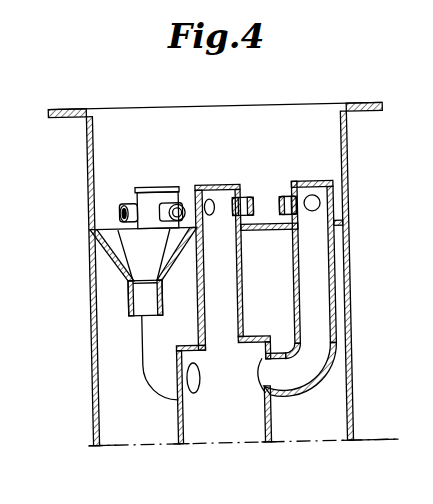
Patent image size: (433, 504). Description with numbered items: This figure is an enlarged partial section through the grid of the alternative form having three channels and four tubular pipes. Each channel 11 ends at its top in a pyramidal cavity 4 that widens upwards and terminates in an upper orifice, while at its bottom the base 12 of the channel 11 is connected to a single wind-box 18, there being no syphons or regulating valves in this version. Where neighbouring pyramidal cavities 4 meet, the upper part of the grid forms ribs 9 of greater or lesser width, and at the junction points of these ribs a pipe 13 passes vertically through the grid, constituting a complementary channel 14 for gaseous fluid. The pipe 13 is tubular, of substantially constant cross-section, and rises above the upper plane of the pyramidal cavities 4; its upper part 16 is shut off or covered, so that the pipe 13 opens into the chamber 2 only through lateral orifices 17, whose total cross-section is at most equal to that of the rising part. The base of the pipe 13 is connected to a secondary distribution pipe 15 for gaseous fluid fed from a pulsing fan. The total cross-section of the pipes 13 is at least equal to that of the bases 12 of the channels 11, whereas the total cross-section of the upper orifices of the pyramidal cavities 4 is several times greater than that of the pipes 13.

The chamber 2 is at (214, 274).
The pyramidal cavity 4 is at (136, 245).
The rib 9 is at (268, 234).
The channel 11 is at (121, 305).
The base of the channel 12 is at (136, 291).
The pipe 13 is at (308, 280).
The complementary channel 14 is at (309, 318).
The secondary distribution pipe 15 is at (212, 430).
The upper part of the pipe 16 is at (214, 183).
The lateral orifice 17 is at (284, 198).
The wind-box 18 is at (105, 408).